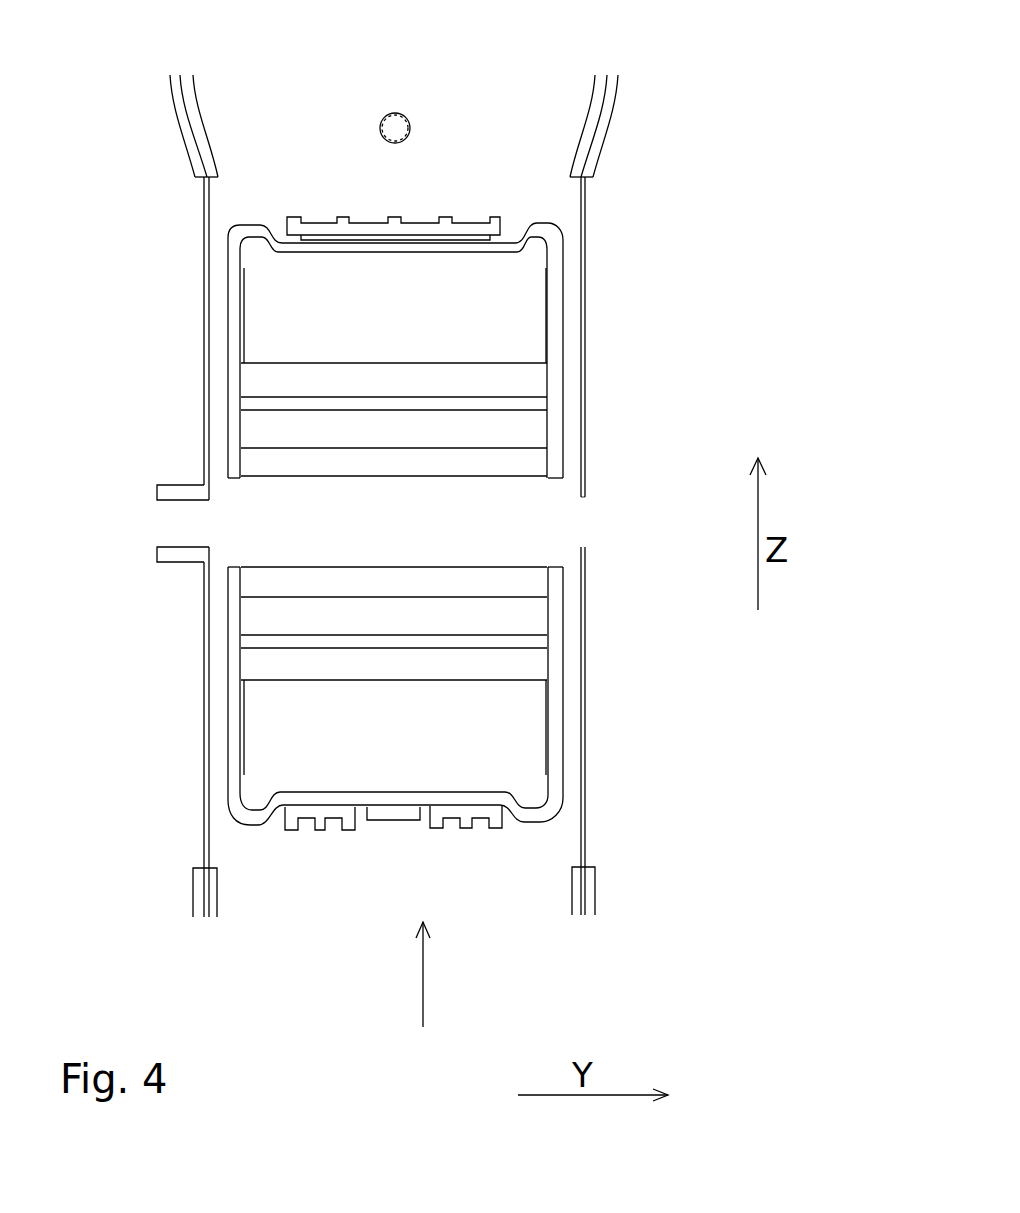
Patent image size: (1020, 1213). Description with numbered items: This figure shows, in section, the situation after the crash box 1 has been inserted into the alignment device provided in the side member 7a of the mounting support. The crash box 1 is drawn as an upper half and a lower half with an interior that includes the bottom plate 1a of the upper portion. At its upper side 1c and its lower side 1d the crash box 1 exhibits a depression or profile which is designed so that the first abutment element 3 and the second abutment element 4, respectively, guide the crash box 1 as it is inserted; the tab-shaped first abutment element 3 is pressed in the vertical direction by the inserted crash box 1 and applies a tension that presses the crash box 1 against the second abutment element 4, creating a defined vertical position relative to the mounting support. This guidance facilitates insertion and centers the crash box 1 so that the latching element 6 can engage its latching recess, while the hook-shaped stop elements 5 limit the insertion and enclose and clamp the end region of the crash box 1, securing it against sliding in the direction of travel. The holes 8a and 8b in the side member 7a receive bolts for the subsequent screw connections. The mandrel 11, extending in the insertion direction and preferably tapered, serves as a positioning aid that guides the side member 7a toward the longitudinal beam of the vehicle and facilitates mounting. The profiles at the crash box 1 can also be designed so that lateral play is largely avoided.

The crash box 1 is at (555, 753).
The bottom plate of upper casing 1a is at (548, 477).
The upper side 1c is at (452, 243).
The lower side 1d is at (293, 798).
The first abutment element 3 is at (368, 227).
The second abutment element 4 is at (415, 990).
The stop 5 is at (470, 812).
The latching element 6 is at (393, 813).
The longitudinal beam 7a is at (586, 843).
The hole 8a is at (558, 528).
The hole 8b is at (230, 522).
The mandrel 11 is at (397, 125).